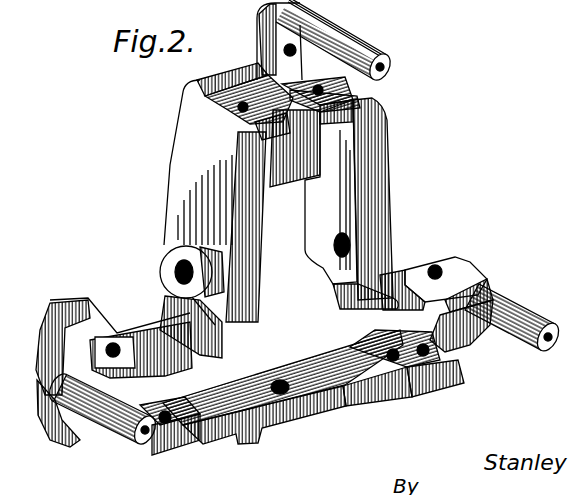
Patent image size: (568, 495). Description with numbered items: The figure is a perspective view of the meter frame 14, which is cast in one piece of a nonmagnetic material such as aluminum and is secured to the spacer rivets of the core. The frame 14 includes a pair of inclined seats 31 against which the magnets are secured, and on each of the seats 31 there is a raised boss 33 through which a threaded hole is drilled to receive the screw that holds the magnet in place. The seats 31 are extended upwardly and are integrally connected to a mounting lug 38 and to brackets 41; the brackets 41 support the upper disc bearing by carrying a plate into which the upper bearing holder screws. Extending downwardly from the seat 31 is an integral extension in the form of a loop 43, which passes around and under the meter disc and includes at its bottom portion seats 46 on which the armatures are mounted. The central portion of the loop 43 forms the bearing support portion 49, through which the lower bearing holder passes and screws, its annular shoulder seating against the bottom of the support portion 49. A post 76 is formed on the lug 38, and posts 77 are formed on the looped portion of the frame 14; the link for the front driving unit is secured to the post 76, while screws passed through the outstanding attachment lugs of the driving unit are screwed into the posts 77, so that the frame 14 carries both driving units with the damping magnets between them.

The frame 14 is at (397, 152).
The inclined seats 31 is at (405, 232).
The raised boss 33 is at (172, 263).
The mounting lug 38 is at (282, 37).
The brackets 41 is at (215, 118).
The loop 43 is at (456, 262).
The seats 46 is at (440, 381).
The bearing support portion 49 is at (308, 421).
The post 76 is at (360, 46).
The posts 77 is at (520, 308).